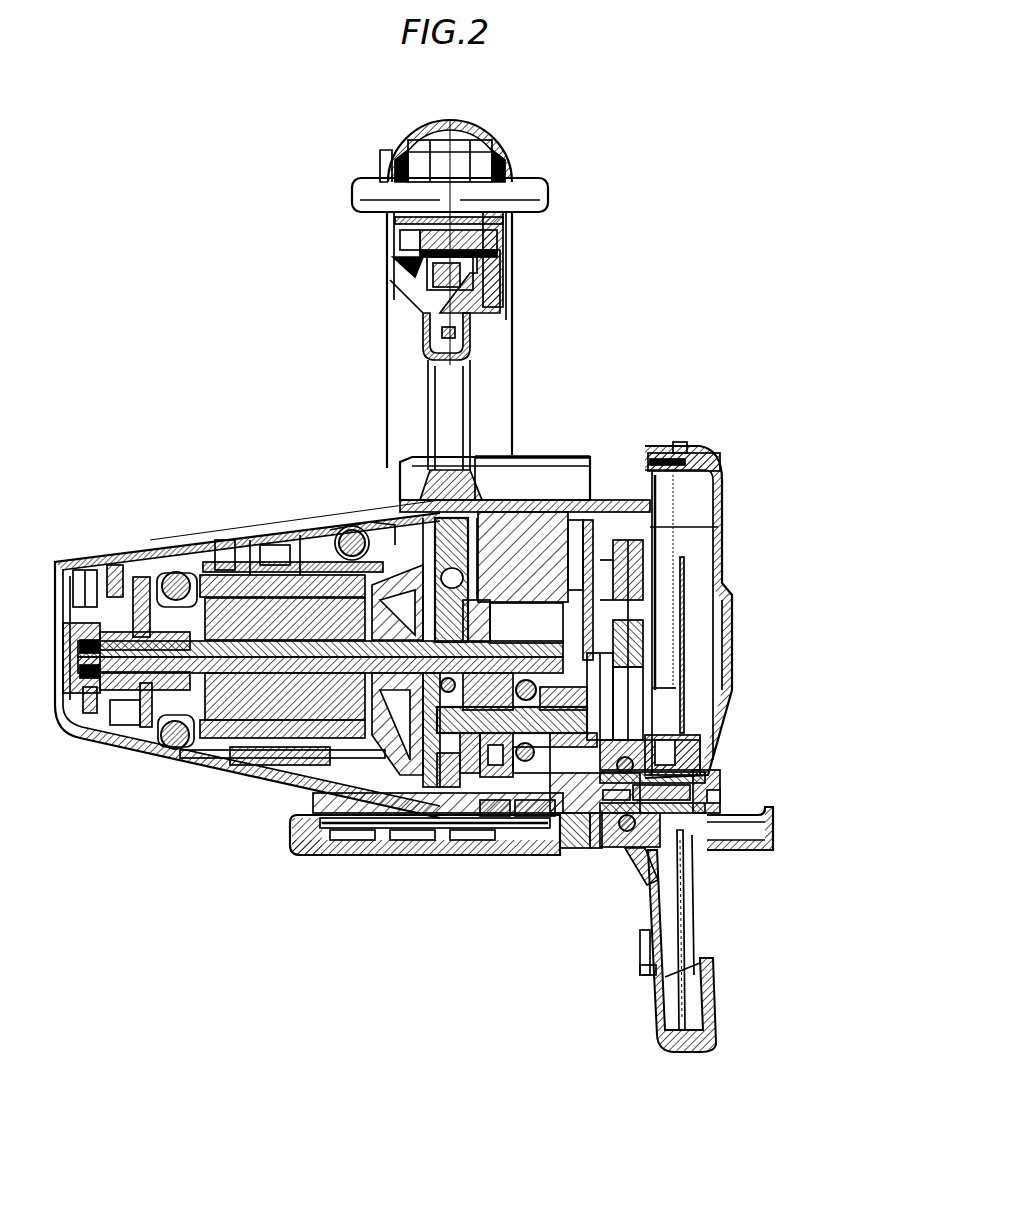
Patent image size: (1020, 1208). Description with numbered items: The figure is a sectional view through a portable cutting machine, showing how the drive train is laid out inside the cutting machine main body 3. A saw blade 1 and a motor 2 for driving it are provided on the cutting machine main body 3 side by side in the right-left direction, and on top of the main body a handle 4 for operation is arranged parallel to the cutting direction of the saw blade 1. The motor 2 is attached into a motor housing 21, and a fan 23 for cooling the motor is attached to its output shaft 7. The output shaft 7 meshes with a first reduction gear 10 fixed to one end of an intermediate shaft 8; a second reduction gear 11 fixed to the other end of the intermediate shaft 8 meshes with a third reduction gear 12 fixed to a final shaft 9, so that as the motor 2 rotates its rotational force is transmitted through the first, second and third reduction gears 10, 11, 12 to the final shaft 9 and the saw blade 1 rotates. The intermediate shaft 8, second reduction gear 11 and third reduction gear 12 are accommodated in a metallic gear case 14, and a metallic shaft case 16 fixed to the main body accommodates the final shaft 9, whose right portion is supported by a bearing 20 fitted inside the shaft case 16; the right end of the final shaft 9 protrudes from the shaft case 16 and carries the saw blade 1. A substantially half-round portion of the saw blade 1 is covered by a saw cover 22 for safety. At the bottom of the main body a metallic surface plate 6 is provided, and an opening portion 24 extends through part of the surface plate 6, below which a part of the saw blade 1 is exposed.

The saw blade 1 is at (692, 898).
The motor 2 is at (262, 536).
The cutting machine main body 3 is at (572, 456).
The handle 4 is at (515, 308).
The surface plate 6 is at (452, 856).
The output shaft 7 is at (243, 660).
The intermediate shaft 8 is at (493, 856).
The final shaft 9 is at (608, 856).
The first reduction gear 10 is at (410, 830).
The second reduction gear 11 is at (545, 856).
The third reduction gear 12 is at (578, 856).
The gear case 14 is at (590, 668).
The shaft case 16 is at (650, 732).
The bearing 20 is at (635, 852).
The motor housing 21 is at (152, 546).
The saw cover 22 is at (718, 527).
The fan 23 is at (370, 508).
The opening portion 24 is at (716, 853).